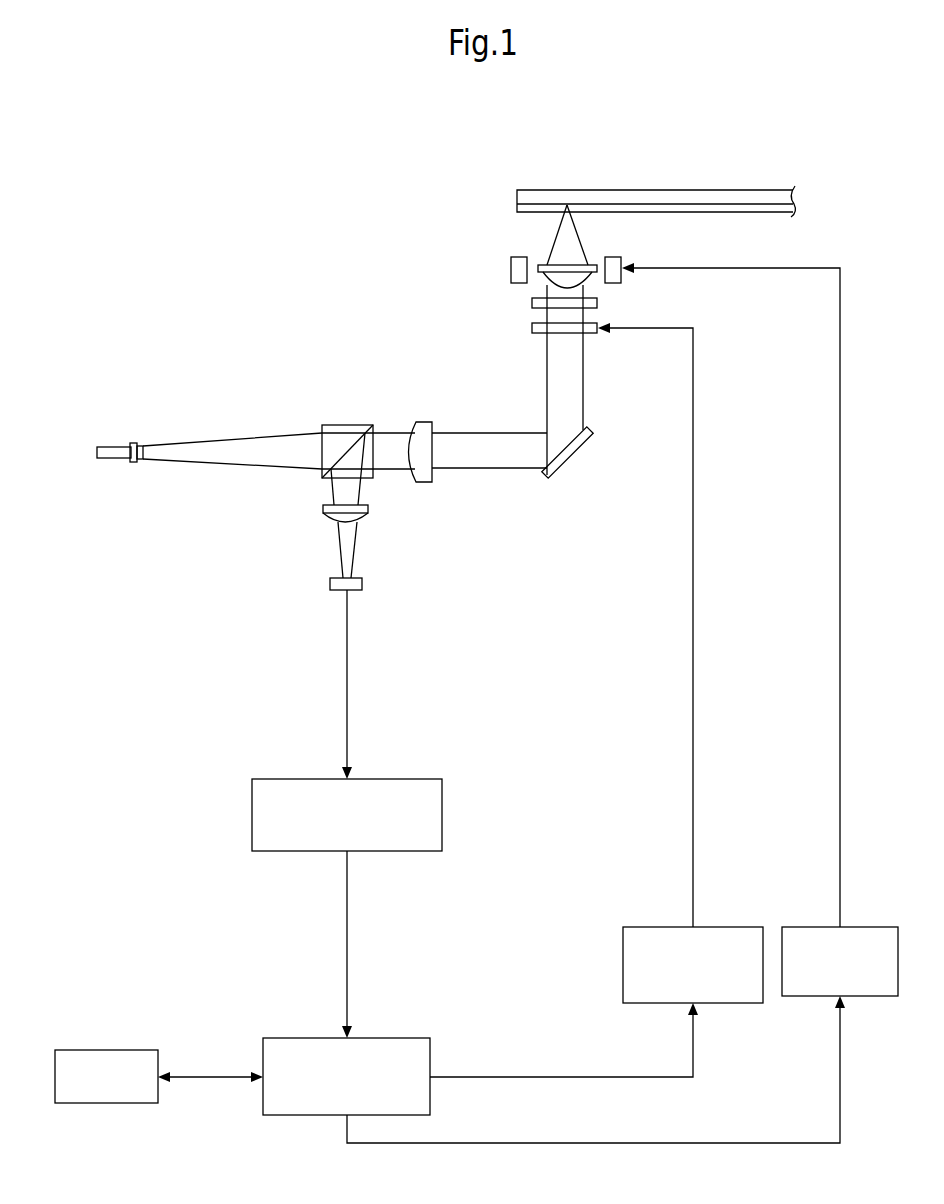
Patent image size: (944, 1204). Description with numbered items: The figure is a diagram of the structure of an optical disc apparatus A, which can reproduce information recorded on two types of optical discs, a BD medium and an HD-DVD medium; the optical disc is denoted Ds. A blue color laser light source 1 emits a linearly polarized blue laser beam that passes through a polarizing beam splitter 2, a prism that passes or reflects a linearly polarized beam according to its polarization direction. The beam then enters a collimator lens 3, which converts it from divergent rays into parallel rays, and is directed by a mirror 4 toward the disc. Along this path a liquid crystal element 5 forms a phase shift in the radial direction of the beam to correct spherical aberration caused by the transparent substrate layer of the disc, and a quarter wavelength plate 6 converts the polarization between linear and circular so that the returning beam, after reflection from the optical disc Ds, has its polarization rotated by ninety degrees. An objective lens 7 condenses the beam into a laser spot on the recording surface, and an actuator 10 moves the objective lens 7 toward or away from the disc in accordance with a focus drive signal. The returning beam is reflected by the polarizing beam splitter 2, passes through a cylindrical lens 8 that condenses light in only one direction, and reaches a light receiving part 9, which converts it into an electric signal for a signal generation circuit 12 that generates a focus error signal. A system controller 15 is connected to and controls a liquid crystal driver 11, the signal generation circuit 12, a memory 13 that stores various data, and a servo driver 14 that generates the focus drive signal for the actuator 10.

The optical disc apparatus A is at (190, 189).
The optical disc Ds is at (692, 195).
The blue color laser light source 1 is at (112, 452).
The polarizing beam splitter 2 is at (338, 432).
The collimator lens 3 is at (424, 430).
The mirror 4 is at (571, 457).
The liquid crystal element 5 is at (530, 327).
The quarter wavelength plate 6 is at (530, 302).
The objective lens 7 is at (542, 270).
The cylindrical lens 8 is at (360, 512).
The light receiving part 9 is at (350, 587).
The actuator 10 is at (618, 262).
The liquid crystal driver 11 is at (658, 937).
The signal generation circuit 12 is at (442, 809).
The memory 13 is at (103, 1050).
The servo driver 14 is at (805, 930).
The system controller 15 is at (412, 1045).